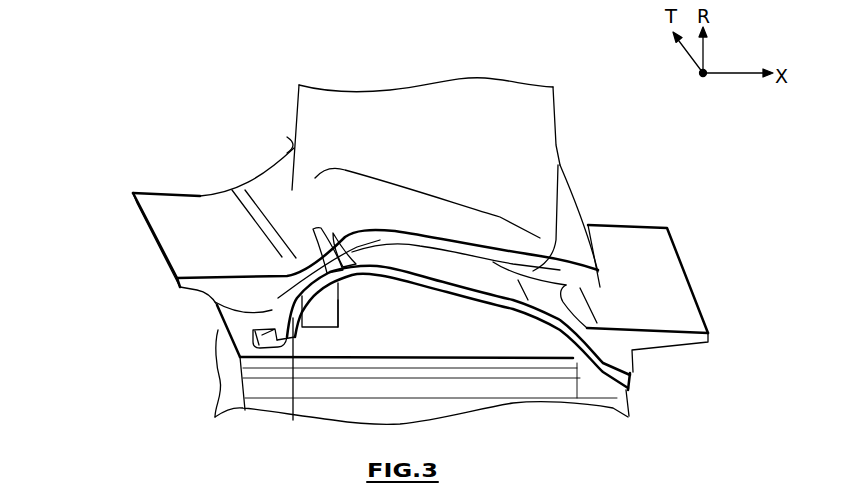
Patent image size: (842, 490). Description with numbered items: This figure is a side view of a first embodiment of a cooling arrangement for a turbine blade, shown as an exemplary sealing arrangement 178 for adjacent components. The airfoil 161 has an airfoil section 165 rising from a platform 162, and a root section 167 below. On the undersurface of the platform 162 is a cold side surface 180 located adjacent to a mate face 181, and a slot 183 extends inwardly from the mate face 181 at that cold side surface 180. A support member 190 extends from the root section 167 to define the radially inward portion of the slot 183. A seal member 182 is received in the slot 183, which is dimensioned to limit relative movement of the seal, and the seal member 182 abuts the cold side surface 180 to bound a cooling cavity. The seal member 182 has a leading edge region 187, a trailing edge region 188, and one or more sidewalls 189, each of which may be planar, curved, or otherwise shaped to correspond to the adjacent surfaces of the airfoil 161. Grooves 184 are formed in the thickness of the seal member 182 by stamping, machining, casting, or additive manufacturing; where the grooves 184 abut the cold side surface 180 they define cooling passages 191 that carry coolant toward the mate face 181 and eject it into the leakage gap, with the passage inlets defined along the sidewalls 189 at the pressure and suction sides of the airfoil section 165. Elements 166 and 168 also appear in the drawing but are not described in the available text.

The airfoil 161 is at (176, 68).
The platform 162 is at (163, 200).
The airfoil section 165 is at (298, 110).
The fillet 166 is at (293, 145).
The root section 167 is at (215, 362).
The second platform 168 is at (558, 145).
The sealing arrangement 178 is at (223, 163).
The cold side surface 180 is at (494, 257).
The mate face 181 is at (575, 218).
The seal member 182 is at (293, 417).
The slot 183 is at (313, 312).
The grooves 184 is at (312, 230).
The leading edge region 187 is at (232, 318).
The trailing edge region 188 is at (632, 378).
The sidewalls 189 is at (450, 290).
The support member 190 is at (330, 308).
The cooling passages 191 is at (308, 274).